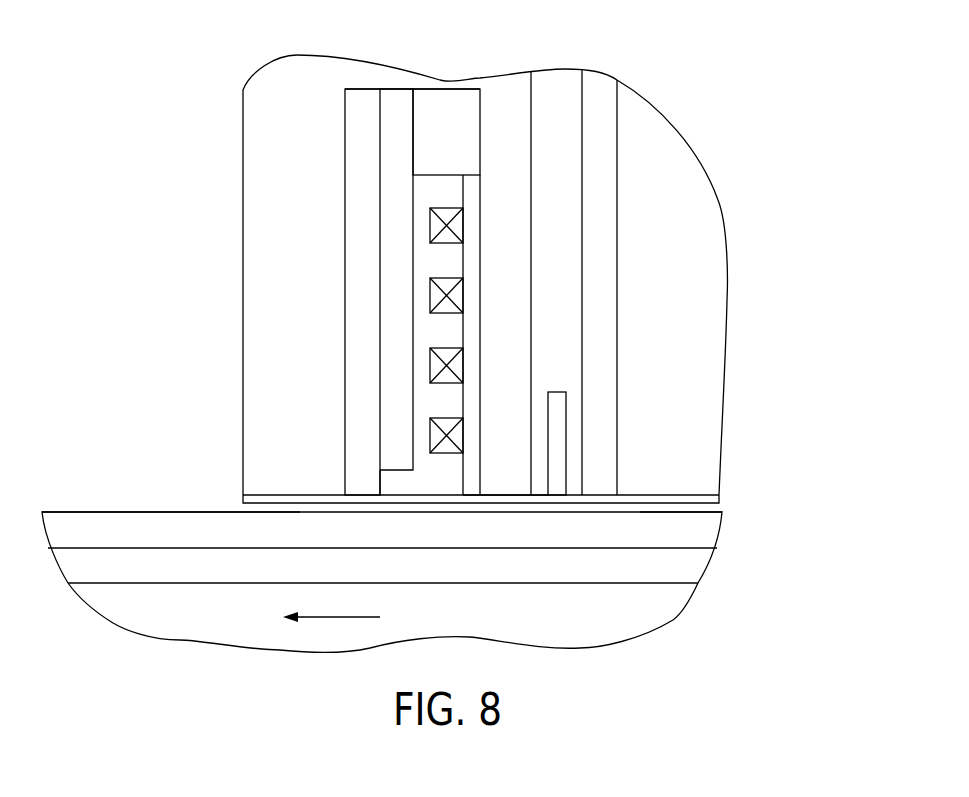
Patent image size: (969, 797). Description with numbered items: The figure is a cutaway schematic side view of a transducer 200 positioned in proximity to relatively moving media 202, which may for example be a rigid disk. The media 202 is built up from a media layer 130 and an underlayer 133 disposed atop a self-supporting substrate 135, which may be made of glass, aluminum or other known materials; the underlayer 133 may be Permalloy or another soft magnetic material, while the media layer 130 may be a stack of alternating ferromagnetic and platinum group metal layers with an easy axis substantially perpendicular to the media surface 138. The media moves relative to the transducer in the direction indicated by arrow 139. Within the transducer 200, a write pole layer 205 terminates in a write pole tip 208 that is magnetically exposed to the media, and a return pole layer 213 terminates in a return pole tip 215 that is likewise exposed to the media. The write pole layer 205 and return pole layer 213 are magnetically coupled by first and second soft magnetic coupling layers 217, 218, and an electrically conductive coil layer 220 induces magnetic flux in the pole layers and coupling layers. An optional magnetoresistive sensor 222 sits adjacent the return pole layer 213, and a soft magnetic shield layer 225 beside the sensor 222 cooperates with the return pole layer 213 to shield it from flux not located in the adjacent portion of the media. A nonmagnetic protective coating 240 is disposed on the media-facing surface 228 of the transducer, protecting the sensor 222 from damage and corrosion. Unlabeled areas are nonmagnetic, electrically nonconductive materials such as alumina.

The transducer 200 is at (128, 279).
The substrate / layer stack 202 is at (770, 565).
The media layer 130 is at (229, 543).
The underlayer 133 is at (164, 578).
The substrate 135 is at (534, 628).
The media surface 138 is at (158, 500).
The arrow 139 is at (332, 617).
The write pole layer 205 is at (345, 332).
The write pole tip 208 is at (367, 495).
The return pole layer 213 is at (525, 291).
The return pole tip 215 is at (518, 495).
The first soft magnetic coupling layer 217 is at (462, 140).
The second soft magnetic coupling layer 218 is at (396, 98).
The coil layer 220 is at (464, 430).
The sensor 222 is at (566, 450).
The shield layer 225 is at (619, 277).
The media-facing surface 228 is at (676, 518).
The protective coating 240 is at (415, 503).